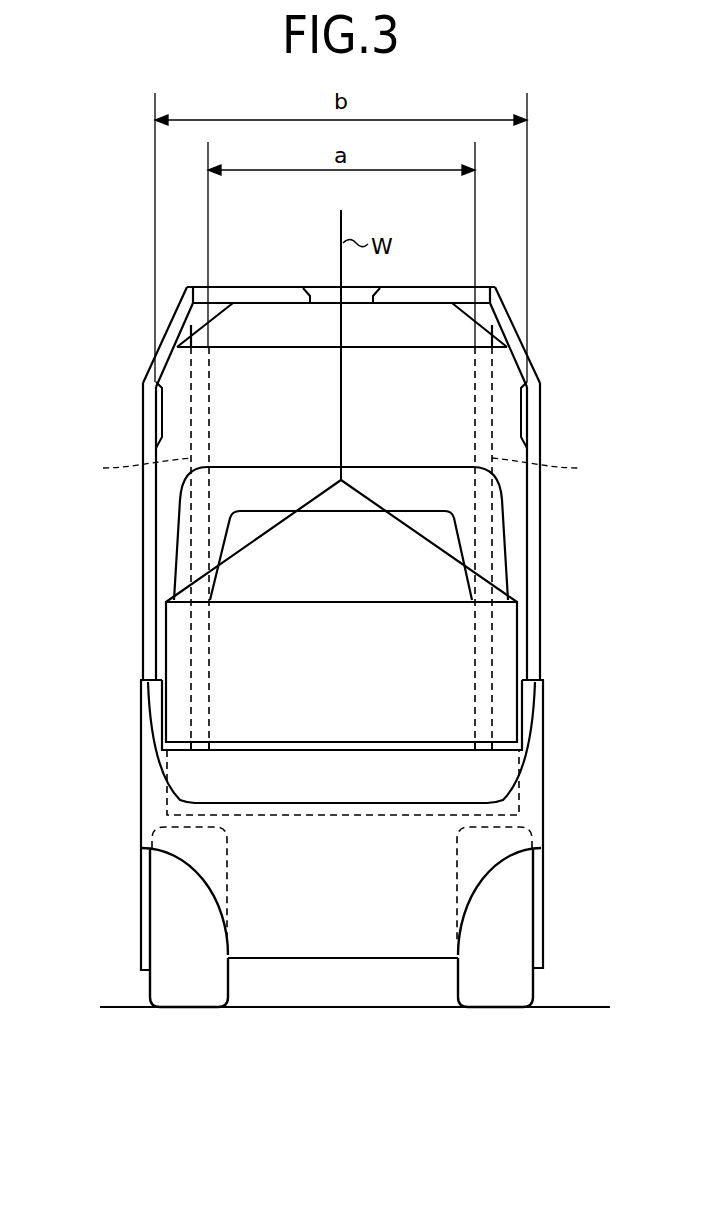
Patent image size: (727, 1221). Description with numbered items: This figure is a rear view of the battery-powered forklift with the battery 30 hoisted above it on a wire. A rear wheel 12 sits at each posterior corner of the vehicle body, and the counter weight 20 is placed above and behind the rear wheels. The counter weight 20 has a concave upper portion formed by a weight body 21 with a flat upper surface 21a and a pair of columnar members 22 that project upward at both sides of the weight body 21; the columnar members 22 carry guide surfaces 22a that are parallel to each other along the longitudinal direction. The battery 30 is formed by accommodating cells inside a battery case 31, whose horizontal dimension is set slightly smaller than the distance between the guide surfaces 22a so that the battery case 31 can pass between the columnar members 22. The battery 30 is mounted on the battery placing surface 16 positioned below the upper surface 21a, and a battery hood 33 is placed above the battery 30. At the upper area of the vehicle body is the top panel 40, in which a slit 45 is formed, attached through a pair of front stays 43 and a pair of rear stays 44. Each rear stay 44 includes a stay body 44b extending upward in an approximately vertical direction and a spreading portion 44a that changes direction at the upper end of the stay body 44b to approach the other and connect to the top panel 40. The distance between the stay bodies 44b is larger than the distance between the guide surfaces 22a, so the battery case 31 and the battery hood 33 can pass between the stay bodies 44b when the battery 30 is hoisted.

The rear wheel 12 is at (163, 983).
The battery placing surface 16 is at (457, 814).
The counter weight 20 is at (558, 838).
The weight body 21 is at (392, 950).
The upper surface of the weight body 21a is at (257, 742).
The columnar member 22 is at (148, 753).
The guide surface 22a is at (163, 727).
The battery 30 is at (505, 627).
The battery case 31 is at (398, 683).
The battery hood 33 is at (177, 535).
The top panel 40 is at (448, 287).
The front stay 43 is at (343, 465).
The rear stay 44 is at (343, 367).
The spreading portion 44a is at (163, 343).
The stay body 44b is at (342, 415).
The slit 45 is at (308, 287).